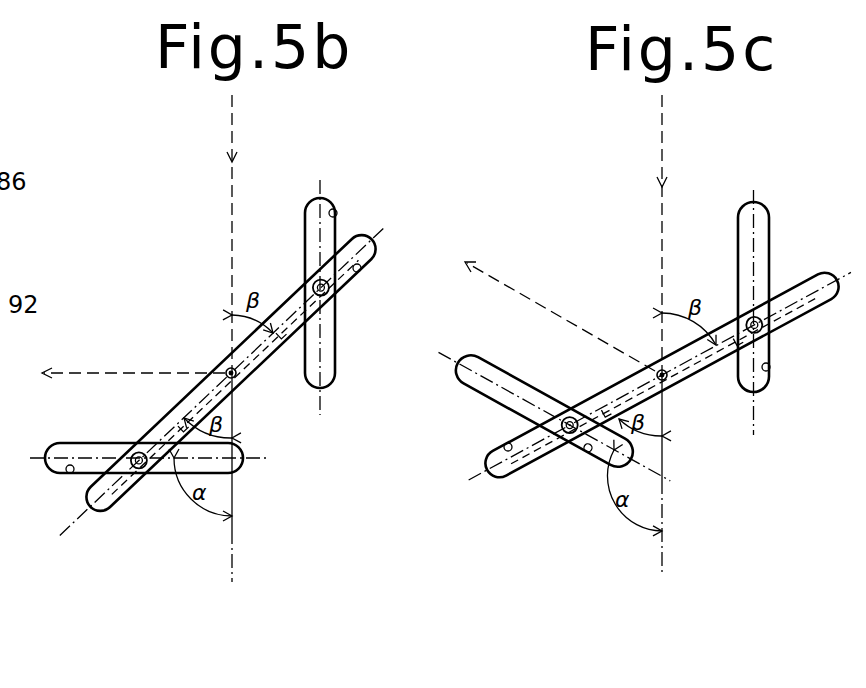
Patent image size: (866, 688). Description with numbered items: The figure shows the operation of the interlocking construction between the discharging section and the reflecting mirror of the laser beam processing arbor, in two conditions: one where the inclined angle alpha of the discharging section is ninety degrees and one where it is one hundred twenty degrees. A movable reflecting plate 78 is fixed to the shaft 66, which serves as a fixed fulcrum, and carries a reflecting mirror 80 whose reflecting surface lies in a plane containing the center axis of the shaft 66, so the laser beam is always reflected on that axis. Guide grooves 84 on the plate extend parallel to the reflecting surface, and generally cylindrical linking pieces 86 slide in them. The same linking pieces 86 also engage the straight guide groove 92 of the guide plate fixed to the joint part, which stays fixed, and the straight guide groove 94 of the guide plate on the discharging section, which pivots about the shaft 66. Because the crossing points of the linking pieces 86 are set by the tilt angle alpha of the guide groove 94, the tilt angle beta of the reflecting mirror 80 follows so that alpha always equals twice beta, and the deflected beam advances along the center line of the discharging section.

In FIG. 5b, the shaft 66 is at (237, 379).
In FIG. 5c, the shaft 66 is at (667, 382).
In FIG. 5b, the movable reflecting plate 78 is at (181, 407).
In FIG. 5c, the movable reflecting plate 78 is at (803, 279).
In FIG. 5b, the reflecting mirror 80 is at (172, 430).
In FIG. 5c, the reflecting mirror 80 is at (618, 386).
In FIG. 5b, the guide grooves 84 is at (358, 272).
In FIG. 5c, the guide grooves 84 is at (505, 444).
In FIG. 5b, the linking pieces 86 is at (311, 283).
In FIG. 5c, the linking pieces 86 is at (662, 375).
In FIG. 5b, the straight guide groove 92 is at (335, 210).
In FIG. 5c, the straight guide groove 92 is at (768, 373).
In FIG. 5b, the straight guide groove 94 is at (63, 471).
In FIG. 5c, the straight guide groove 94 is at (585, 453).